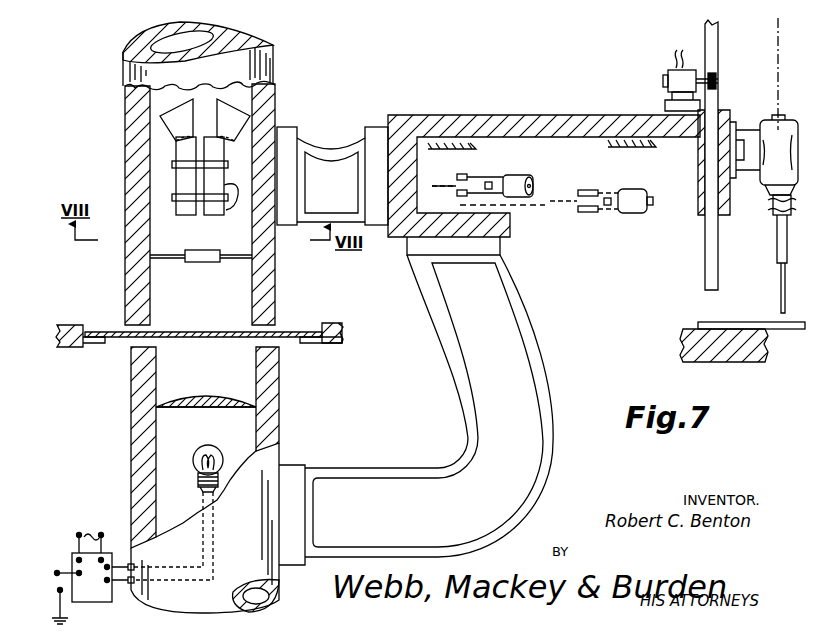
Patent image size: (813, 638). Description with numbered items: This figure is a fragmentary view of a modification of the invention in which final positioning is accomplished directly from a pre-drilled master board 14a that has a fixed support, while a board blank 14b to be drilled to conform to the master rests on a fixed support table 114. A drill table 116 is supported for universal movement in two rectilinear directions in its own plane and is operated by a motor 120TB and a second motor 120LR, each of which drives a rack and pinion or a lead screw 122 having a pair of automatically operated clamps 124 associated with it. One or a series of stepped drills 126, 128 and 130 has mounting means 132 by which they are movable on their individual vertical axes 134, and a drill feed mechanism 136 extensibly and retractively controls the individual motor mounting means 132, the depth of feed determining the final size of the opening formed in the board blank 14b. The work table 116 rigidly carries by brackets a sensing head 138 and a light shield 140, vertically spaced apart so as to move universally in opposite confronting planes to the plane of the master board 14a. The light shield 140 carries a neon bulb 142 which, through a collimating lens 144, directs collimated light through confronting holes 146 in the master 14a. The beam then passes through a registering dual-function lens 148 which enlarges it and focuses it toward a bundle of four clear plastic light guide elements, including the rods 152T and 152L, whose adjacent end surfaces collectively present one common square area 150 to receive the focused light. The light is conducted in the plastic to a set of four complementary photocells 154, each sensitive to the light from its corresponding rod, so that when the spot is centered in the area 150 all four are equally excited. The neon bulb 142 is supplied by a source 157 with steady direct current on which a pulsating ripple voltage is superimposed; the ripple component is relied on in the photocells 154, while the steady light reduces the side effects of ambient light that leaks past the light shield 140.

The sensing head 138 is at (133, 127).
The photocells 154 is at (158, 103).
The light guide element 152L is at (186, 181).
The light guide element 152T is at (228, 210).
The common square area 150 is at (183, 221).
The dual-function lens 148 is at (183, 265).
The holes 146 is at (205, 331).
The master board 14a is at (306, 331).
The light shield 140 is at (281, 412).
The collimating lens 144 is at (226, 390).
The neon bulb 142 is at (207, 446).
The source 157 is at (86, 601).
The drill table 116 is at (497, 115).
The clamps 124 is at (461, 173).
The motor 120TB is at (522, 170).
The second motor 120LR is at (636, 190).
The lead screw 122 is at (540, 207).
The vertical axis 134 is at (776, 38).
The drill feed mechanism 136 is at (668, 80).
The mounting means 132 is at (713, 97).
The stepped drill 130 is at (760, 128).
The stepped drill 128 is at (773, 203).
The stepped drill 126 is at (777, 250).
The board blank 14b is at (719, 322).
The fixed support table 114 is at (680, 345).